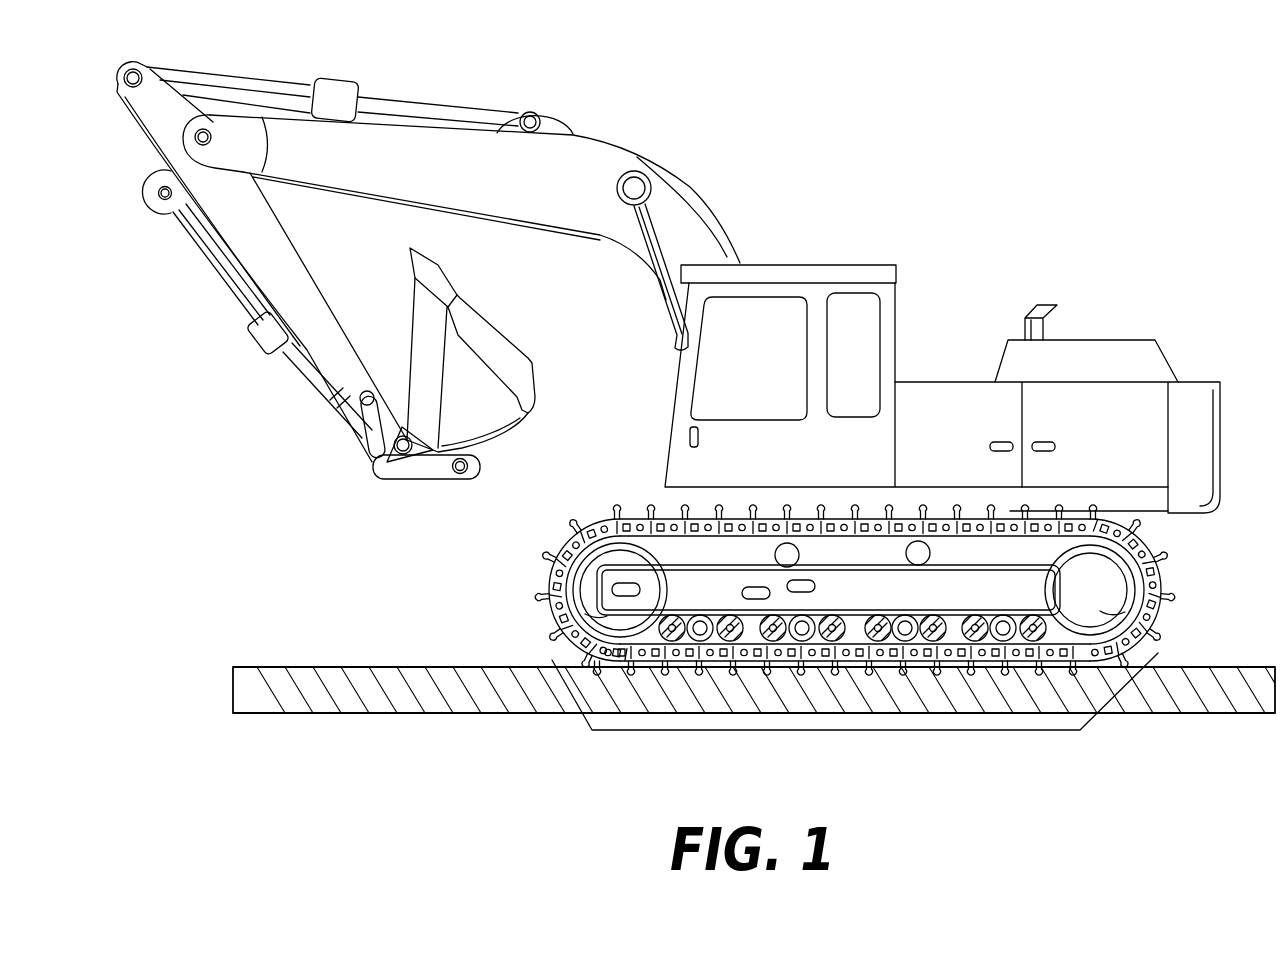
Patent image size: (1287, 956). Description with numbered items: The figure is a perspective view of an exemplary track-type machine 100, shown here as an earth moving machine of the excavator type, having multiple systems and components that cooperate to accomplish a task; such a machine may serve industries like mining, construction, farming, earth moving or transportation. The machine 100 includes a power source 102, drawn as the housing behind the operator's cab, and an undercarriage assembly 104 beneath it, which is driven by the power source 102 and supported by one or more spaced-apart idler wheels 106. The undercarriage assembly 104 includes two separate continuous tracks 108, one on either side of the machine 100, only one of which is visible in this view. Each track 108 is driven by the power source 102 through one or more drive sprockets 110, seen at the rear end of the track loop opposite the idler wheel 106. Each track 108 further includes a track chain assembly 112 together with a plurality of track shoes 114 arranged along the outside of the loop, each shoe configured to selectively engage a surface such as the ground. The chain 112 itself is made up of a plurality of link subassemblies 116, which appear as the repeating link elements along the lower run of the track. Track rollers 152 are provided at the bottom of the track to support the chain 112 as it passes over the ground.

The machine 100 is at (681, 73).
The power source 102 is at (1145, 393).
The undercarriage assembly 104 is at (846, 733).
The idler wheels 106 is at (556, 620).
The continuous track 108 is at (1180, 568).
The drive sprocket 110 is at (1145, 616).
The track chain assembly 112 is at (1045, 507).
The track shoes 114 is at (757, 512).
The link subassemblies 116 is at (1053, 660).
The track rollers 152 is at (1033, 615).